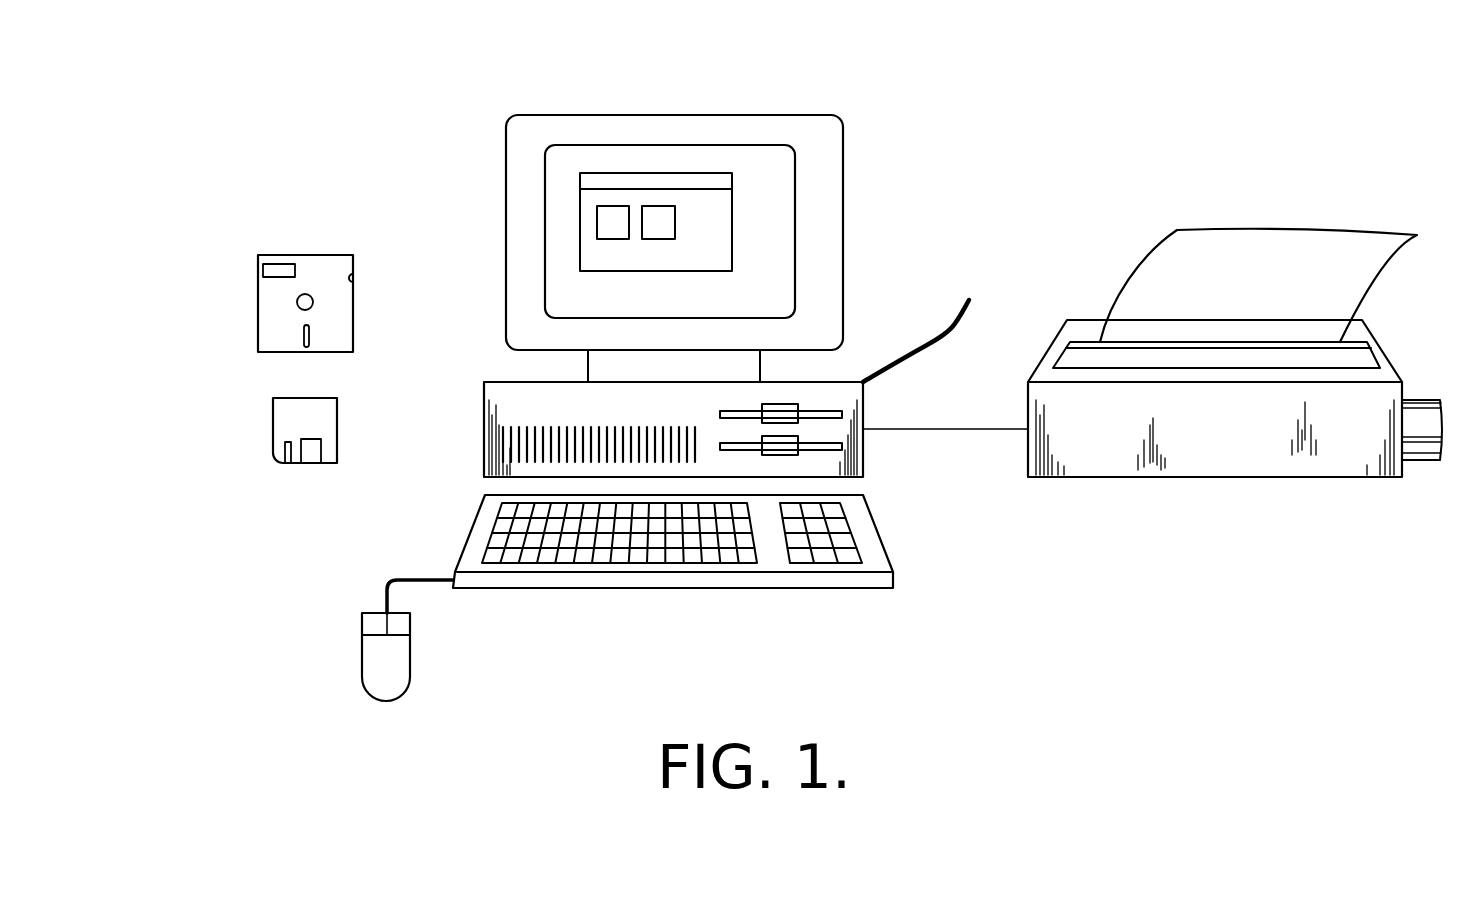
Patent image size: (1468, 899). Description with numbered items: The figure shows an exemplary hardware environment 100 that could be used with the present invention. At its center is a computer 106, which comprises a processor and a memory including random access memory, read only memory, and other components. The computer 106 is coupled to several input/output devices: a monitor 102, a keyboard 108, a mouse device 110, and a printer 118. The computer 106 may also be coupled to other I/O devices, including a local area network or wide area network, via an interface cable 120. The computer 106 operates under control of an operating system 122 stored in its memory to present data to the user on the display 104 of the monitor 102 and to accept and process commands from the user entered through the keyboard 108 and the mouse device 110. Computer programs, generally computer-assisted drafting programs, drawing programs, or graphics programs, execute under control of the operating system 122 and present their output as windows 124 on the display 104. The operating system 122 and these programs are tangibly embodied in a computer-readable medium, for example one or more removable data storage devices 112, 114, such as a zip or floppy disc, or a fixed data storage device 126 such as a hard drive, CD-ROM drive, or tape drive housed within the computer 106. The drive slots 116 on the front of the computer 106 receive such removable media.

The hardware environment 100 is at (863, 92).
The monitor 102 is at (505, 250).
The display 104 is at (545, 192).
The computer 106 is at (495, 432).
The keyboard 108 is at (830, 590).
The mouse device 110 is at (368, 695).
The removable data storage device 112 is at (258, 318).
The removable data storage device 114 is at (283, 430).
The disk drives 116 is at (842, 447).
The printer 118 is at (1218, 452).
The interface cable 120 is at (917, 342).
The operating system 122 is at (555, 163).
The window 124 is at (597, 173).
The fixed data storage device 126 is at (530, 400).